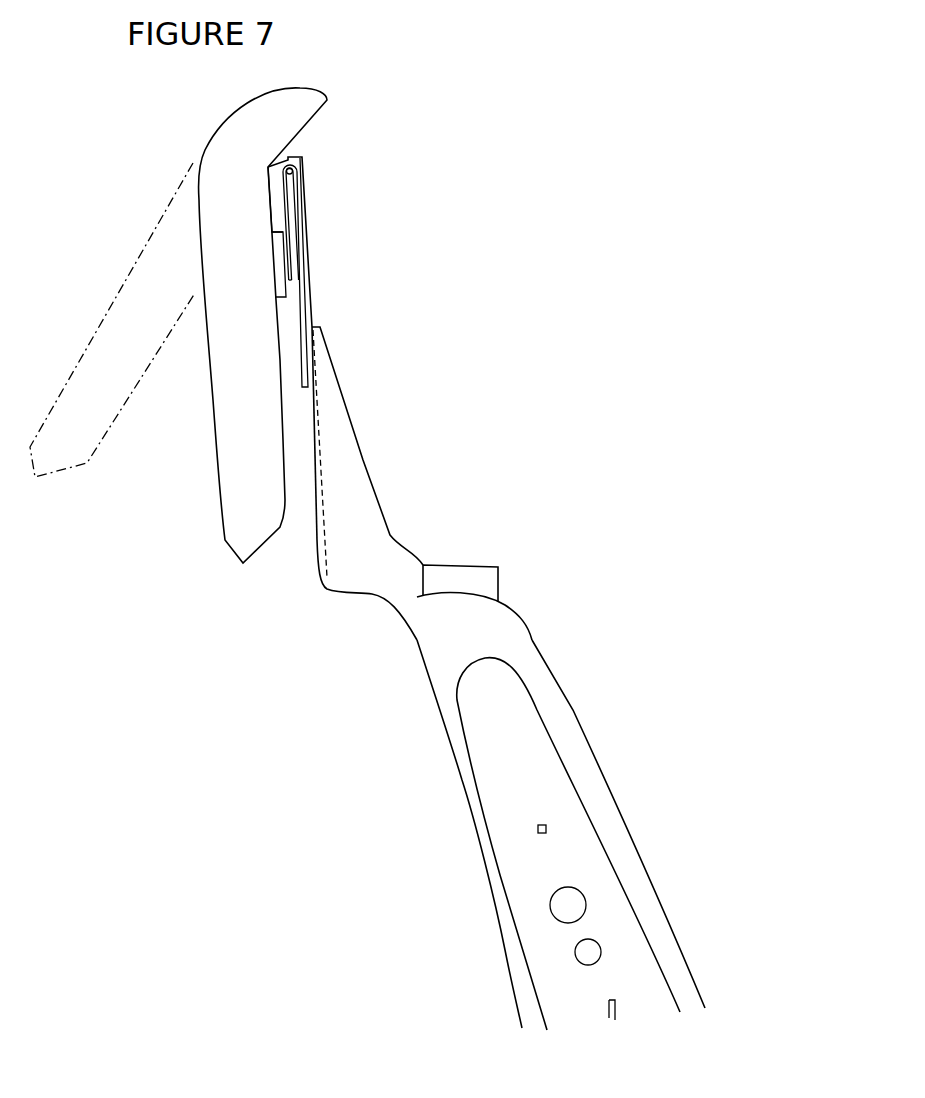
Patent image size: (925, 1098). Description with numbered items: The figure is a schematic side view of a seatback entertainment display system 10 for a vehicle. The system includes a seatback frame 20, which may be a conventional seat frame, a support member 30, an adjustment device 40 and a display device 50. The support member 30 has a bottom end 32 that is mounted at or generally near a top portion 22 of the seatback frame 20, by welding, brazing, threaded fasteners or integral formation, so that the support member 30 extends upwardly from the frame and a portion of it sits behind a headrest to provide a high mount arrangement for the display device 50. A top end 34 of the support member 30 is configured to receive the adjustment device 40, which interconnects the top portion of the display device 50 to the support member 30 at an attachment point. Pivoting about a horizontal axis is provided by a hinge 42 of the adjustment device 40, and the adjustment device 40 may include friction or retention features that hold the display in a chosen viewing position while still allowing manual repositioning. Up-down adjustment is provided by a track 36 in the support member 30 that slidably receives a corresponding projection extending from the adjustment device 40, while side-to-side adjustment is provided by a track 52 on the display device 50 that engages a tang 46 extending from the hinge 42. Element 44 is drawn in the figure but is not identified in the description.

The seatback entertainment display system 10 is at (517, 240).
The seatback frame 20 is at (510, 800).
The top portion 22 is at (493, 640).
The support member 30 is at (360, 507).
The bottom end 32 is at (382, 583).
The top end 34 is at (328, 365).
The track 36 is at (312, 547).
The adjustment device 40 is at (320, 185).
The hinge 42 is at (302, 157).
The pin arm 44 is at (313, 290).
The tang 46 is at (277, 215).
The display device 50 is at (233, 435).
The track 52 is at (278, 262).